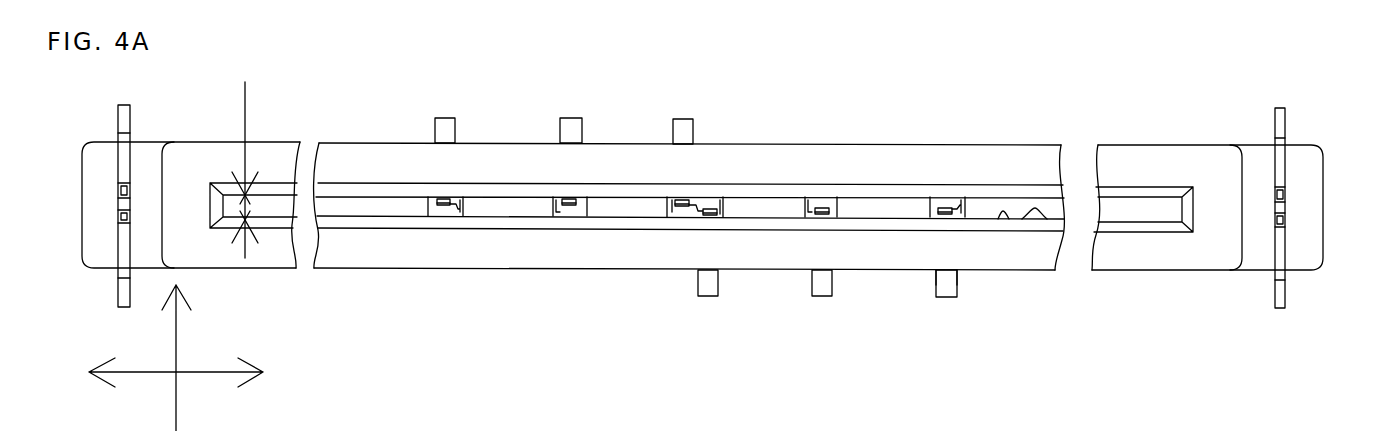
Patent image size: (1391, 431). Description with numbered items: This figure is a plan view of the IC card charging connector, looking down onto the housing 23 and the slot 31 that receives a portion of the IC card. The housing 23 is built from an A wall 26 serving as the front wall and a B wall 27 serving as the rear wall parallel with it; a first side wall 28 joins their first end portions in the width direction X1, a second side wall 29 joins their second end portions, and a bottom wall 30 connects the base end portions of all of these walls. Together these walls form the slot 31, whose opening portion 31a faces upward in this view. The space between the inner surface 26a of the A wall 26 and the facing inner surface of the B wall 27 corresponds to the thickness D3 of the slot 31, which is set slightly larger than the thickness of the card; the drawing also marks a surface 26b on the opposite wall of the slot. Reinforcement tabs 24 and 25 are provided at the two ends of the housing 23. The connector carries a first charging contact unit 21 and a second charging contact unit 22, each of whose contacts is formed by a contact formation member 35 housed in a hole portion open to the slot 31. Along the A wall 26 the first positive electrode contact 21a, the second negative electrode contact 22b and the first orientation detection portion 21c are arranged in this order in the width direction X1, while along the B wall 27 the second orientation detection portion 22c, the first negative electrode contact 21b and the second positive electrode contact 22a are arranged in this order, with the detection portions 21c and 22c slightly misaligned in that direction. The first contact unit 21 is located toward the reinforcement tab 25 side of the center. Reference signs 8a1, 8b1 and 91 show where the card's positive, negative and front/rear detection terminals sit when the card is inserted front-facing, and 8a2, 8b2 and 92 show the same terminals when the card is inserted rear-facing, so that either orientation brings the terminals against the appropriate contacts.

The reinforcement tab 24 is at (132, 118).
The reinforcement tab 25 is at (1288, 122).
The housing 23 is at (1205, 152).
The first side wall 28 is at (182, 208).
The second side wall 29 is at (1227, 217).
The bottom wall 30 is at (1158, 208).
The slot 31 is at (1036, 212).
The opening portion 31a is at (1005, 220).
The A wall 26 is at (678, 210).
The inner surface of the A wall 26a is at (352, 216).
The upper inner wall of housing 26b is at (336, 196).
The B wall 27 is at (352, 152).
The second charging contact unit 22 is at (650, 212).
The second positive electrode contact 22a is at (446, 112).
The second negative electrode contact 22b is at (822, 300).
The second orientation detection portion 22c is at (685, 113).
The first charging contact unit 21 is at (810, 213).
The first positive electrode contact 21a is at (945, 300).
The first negative electrode contact 21b is at (572, 112).
The first orientation detection portion 21c is at (707, 300).
The contact formation member 35 is at (940, 280).
The front/rear detection terminal in front-facing orientation 91 is at (726, 213).
The front/rear detection terminal in rear-facing orientation 92 is at (673, 215).
The positive terminal in front-facing orientation 8a1 is at (967, 212).
The positive terminal in rear-facing orientation 8a2 is at (462, 206).
The negative terminal in front-facing orientation 8b1 is at (557, 213).
The negative terminal in rear-facing orientation 8b2 is at (808, 216).
The thickness of the slot D3 is at (232, 170).
The width direction X1 is at (205, 372).